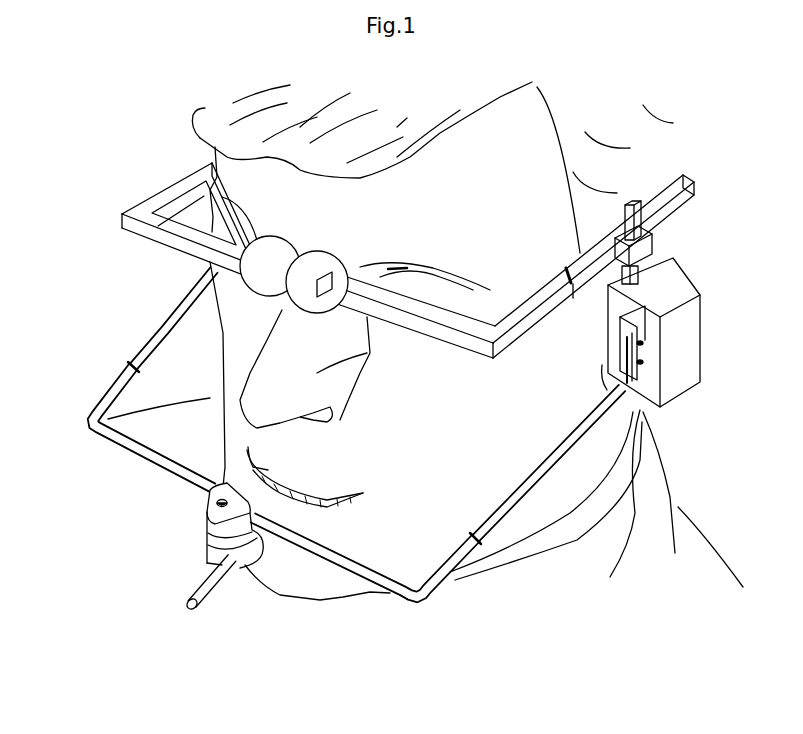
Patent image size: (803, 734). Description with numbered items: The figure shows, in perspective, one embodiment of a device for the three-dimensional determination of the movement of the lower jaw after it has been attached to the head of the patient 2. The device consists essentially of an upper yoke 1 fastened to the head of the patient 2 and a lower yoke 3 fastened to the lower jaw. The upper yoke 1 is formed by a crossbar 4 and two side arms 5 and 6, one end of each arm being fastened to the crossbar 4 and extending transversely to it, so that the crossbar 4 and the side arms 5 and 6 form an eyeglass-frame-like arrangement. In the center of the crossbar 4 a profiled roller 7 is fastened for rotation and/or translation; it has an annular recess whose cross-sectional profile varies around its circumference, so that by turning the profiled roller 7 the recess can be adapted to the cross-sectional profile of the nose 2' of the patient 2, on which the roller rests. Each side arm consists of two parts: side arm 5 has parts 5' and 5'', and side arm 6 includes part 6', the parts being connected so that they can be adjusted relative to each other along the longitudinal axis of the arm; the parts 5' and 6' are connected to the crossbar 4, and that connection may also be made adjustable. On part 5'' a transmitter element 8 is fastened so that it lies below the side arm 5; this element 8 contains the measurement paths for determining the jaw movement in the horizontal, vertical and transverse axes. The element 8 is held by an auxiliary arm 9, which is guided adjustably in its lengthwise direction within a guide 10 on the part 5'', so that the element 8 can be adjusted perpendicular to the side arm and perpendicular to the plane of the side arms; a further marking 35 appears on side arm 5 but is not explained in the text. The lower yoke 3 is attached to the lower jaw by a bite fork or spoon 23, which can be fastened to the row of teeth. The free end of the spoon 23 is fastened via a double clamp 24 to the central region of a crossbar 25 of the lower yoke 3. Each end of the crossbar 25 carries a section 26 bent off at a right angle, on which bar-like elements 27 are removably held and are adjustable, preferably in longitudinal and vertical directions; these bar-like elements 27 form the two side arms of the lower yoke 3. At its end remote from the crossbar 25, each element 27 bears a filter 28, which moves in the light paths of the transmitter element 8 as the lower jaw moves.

The upper yoke 1 is at (105, 250).
The head of the patient 2 is at (425, 341).
The nose 2' is at (327, 369).
The lower yoke 3 is at (384, 625).
The crossbar 4 is at (190, 247).
The side arm 5 is at (593, 275).
The part of side arm 5' is at (536, 286).
The part of side arm 5'' is at (656, 227).
The side arm 6 is at (160, 204).
The part of side arm 6' is at (204, 185).
The profiled roller 7 is at (263, 283).
The transmitter element 8 is at (690, 357).
The auxiliary arm 9 is at (638, 270).
The guide 10 is at (652, 243).
The bite fork or spoon 23 is at (205, 593).
The double clamp 24 is at (206, 542).
The crossbar 25 is at (173, 465).
The bent-off section 26 is at (113, 390).
The bar-like element 27 is at (163, 335).
The filter 28 is at (648, 412).
The marking 35 is at (583, 277).